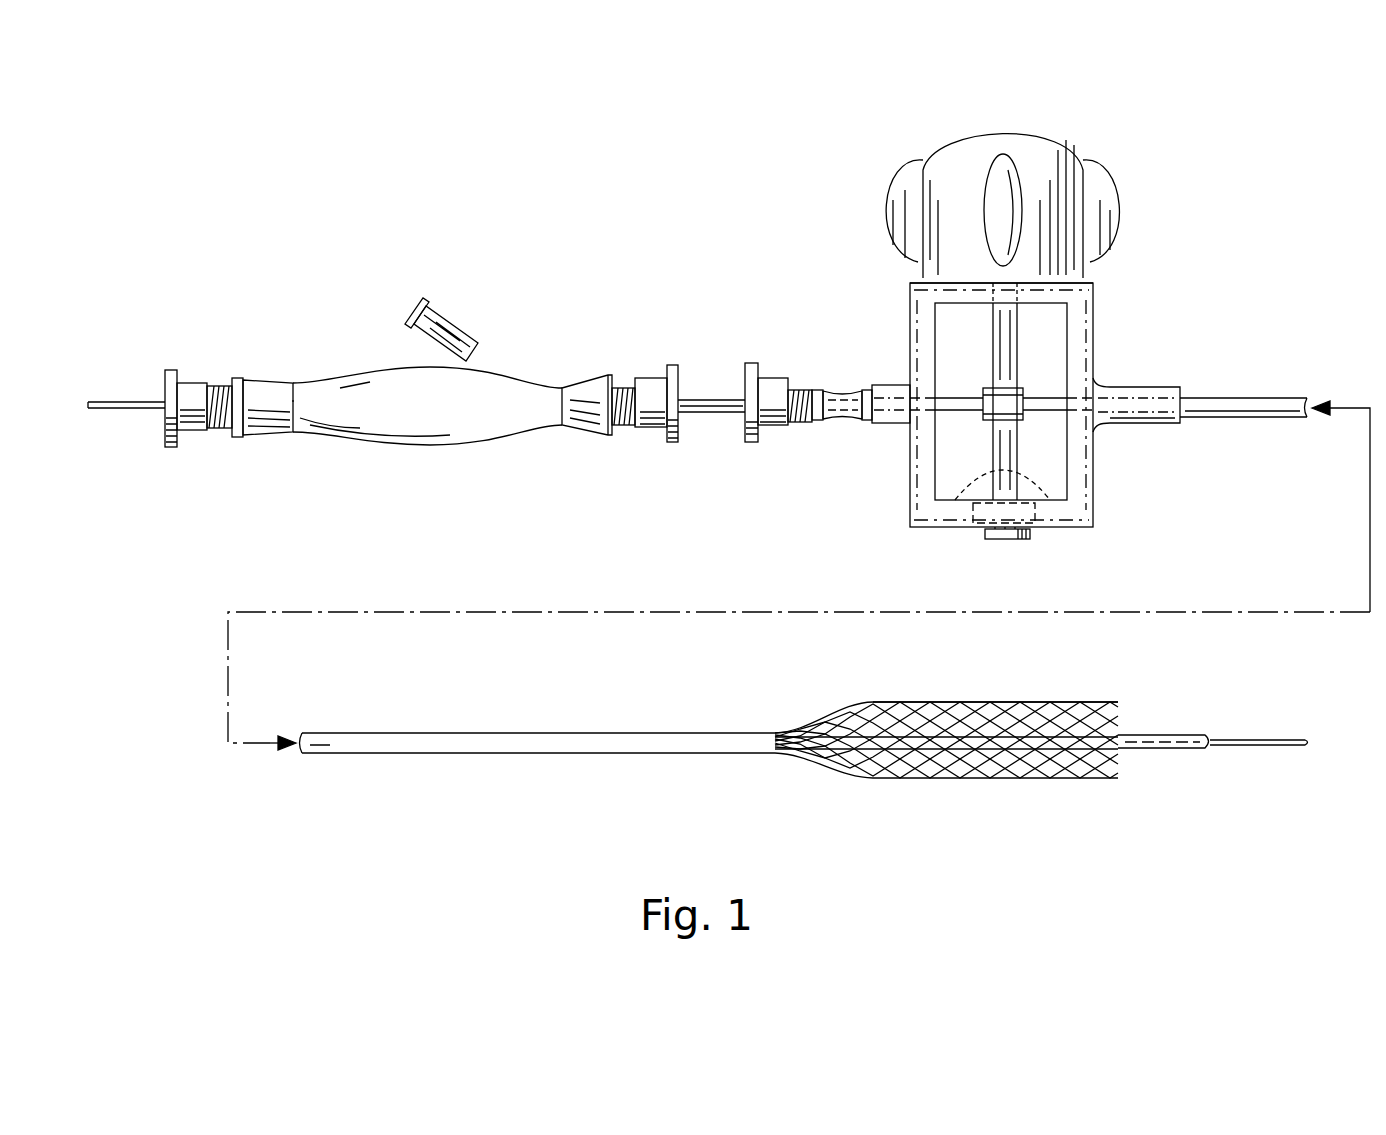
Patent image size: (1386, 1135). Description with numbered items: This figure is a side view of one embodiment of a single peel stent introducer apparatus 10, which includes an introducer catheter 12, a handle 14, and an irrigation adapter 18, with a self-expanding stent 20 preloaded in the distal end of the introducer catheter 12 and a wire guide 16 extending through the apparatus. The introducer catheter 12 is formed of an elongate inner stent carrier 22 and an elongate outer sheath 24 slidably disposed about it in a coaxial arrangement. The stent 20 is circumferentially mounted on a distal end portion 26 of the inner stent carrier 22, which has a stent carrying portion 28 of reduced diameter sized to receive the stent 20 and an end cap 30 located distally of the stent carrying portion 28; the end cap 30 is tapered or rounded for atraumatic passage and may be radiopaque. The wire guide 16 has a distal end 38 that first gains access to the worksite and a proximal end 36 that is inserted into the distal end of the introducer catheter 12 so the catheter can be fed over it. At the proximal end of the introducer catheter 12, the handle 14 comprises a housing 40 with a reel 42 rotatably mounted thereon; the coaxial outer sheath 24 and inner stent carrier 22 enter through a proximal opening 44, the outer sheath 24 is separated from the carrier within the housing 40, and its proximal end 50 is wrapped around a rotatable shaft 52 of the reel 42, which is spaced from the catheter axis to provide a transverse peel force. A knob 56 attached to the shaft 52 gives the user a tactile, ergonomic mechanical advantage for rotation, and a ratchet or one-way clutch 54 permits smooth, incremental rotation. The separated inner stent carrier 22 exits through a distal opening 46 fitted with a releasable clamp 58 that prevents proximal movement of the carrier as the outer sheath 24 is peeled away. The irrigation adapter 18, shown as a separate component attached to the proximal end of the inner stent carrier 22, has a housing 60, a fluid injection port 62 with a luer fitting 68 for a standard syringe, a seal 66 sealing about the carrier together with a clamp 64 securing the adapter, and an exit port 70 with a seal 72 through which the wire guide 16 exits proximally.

The single peel stent introducer apparatus 10 is at (1262, 134).
The introducer catheter 12 is at (1285, 402).
The handle 14 is at (878, 264).
The wire guide 16 is at (135, 412).
The irrigation adapter 18 is at (342, 314).
The self-expanding stent 20 is at (965, 777).
The inner stent carrier 22 is at (712, 400).
The outer sheath 24 is at (1100, 413).
The distal end portion 26 is at (1084, 800).
The stent carrying portion 28 is at (1045, 752).
The end cap 30 is at (1188, 752).
The proximal end 36 is at (102, 372).
The distal end 38 is at (1307, 750).
The housing 40 is at (907, 508).
The reel 42 is at (990, 472).
The proximal opening 44 is at (1112, 425).
The distal opening 46 is at (895, 398).
The proximal end 50 is at (1050, 400).
The rotatable shaft 52 is at (1017, 470).
The ratchet or one-way clutch 54 is at (975, 522).
The knob 56 is at (938, 147).
The clamp 58 is at (752, 443).
The housing 60 is at (492, 448).
The fluid injection port 62 is at (463, 343).
The clamp 64 is at (653, 387).
The seal 66 is at (627, 385).
The luer fitting 68 is at (438, 302).
The exit port 70 is at (260, 393).
The seal 72 is at (222, 432).